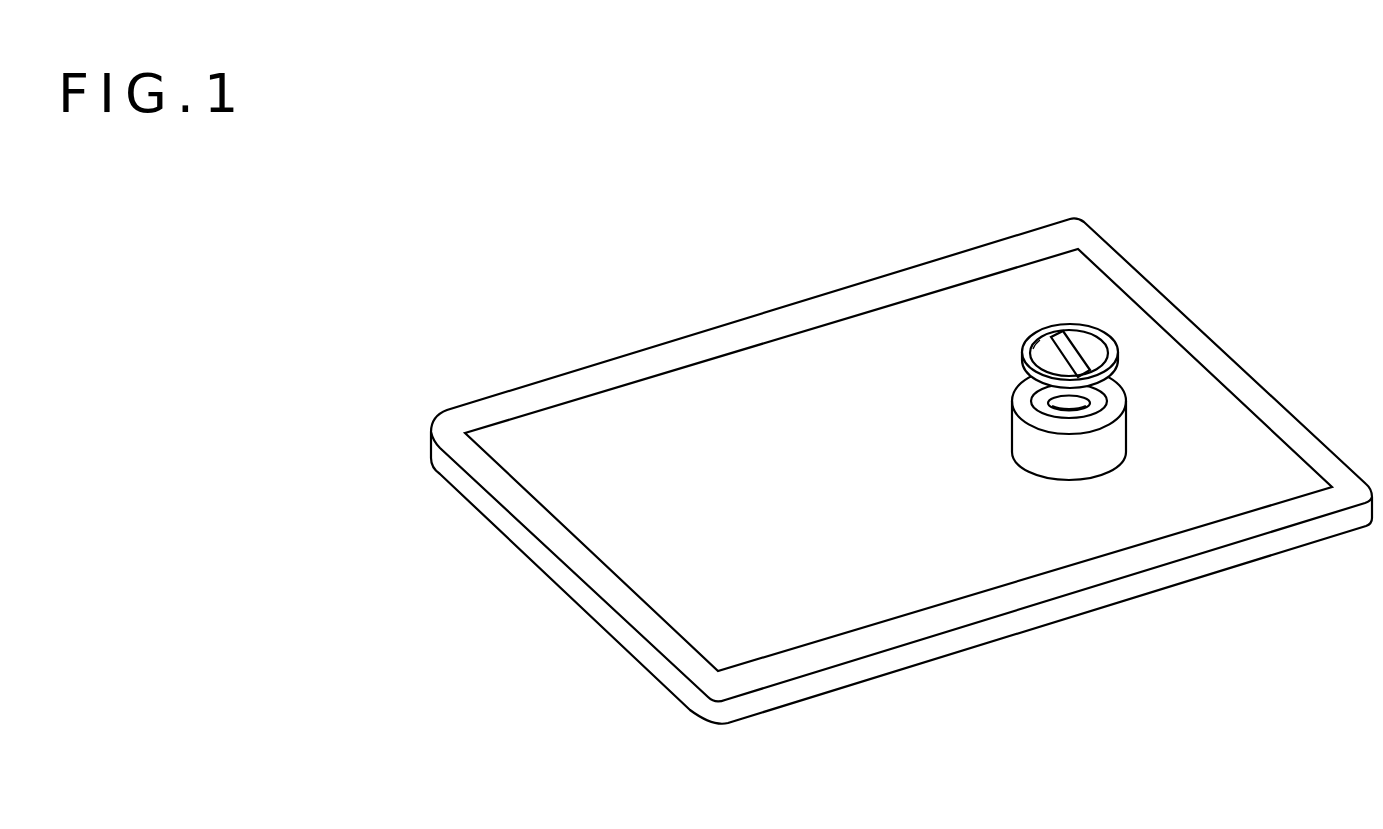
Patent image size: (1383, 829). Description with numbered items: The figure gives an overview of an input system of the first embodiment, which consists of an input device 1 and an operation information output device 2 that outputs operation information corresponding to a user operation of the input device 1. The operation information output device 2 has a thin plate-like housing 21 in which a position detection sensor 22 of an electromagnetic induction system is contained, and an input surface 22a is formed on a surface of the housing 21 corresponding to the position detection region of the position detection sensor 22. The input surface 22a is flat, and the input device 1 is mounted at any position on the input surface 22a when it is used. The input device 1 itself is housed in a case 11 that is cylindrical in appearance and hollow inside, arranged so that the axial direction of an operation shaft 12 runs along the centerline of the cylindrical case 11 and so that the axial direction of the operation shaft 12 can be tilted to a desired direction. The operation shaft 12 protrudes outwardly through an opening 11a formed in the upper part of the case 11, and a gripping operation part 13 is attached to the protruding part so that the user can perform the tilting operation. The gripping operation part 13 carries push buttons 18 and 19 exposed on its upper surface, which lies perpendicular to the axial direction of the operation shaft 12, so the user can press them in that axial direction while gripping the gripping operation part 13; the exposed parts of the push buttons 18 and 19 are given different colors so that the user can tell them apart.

The input device 1 is at (1070, 406).
The case 11 is at (1028, 453).
The opening 11a is at (1072, 412).
The operation shaft 12 is at (1062, 403).
The gripping operation part 13 is at (1022, 354).
The push button 18 is at (1038, 350).
The push button 19 is at (1082, 342).
The operation information output device 2 is at (901, 470).
The housing 21 is at (965, 643).
The position detection sensor 22 is at (687, 612).
The input surface 22a is at (637, 558).